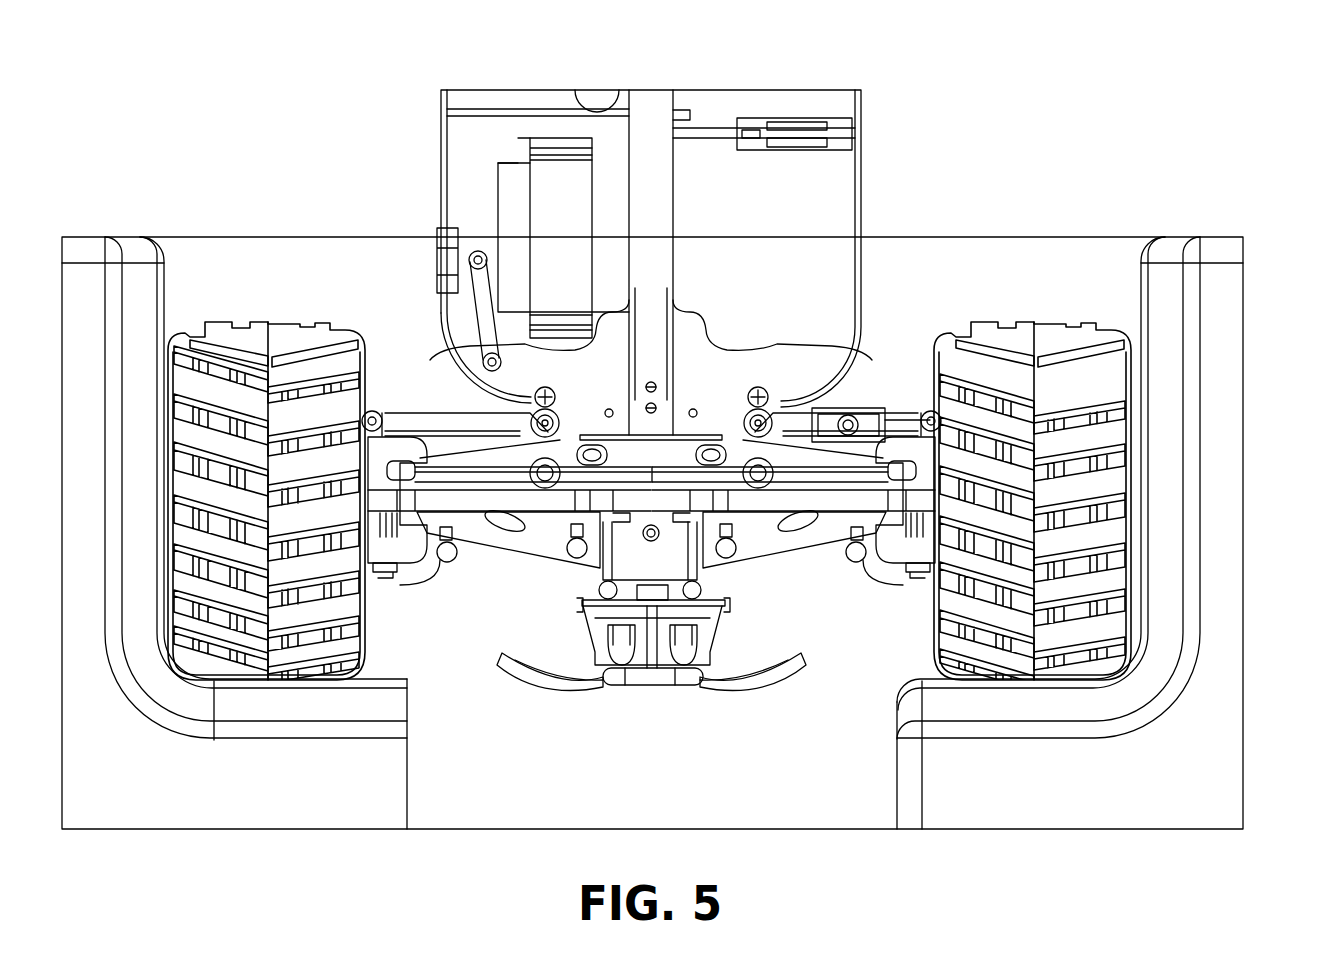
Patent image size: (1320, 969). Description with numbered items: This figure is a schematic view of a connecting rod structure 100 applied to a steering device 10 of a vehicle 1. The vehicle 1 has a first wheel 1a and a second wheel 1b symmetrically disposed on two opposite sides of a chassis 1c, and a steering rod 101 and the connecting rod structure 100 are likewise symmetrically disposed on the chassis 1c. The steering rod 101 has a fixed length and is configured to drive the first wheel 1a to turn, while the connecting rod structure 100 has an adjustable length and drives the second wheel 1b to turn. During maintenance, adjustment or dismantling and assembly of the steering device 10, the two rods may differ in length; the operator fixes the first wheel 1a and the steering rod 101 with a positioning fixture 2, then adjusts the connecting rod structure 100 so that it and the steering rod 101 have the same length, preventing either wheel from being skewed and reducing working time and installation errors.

The vehicle 1 is at (895, 116).
The first wheel 1a is at (248, 322).
The second wheel 1b is at (1055, 355).
The chassis 1c is at (720, 108).
The positioning fixture 2 is at (1215, 360).
The steering device 10 is at (476, 196).
The connecting rod structure 100 is at (868, 395).
The steering rod 101 is at (418, 420).